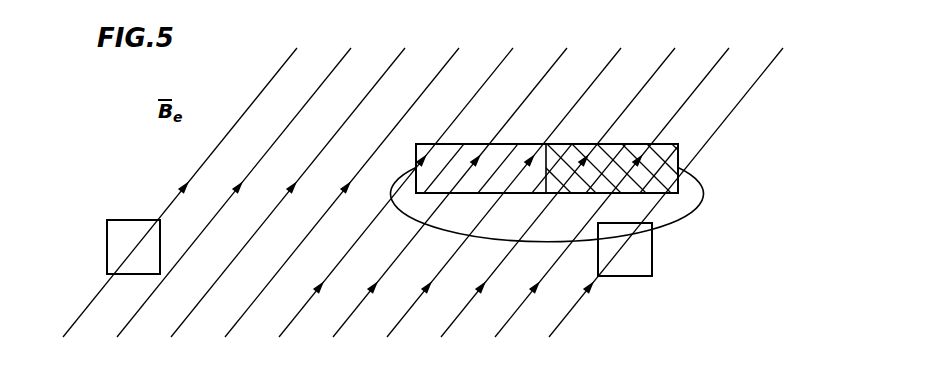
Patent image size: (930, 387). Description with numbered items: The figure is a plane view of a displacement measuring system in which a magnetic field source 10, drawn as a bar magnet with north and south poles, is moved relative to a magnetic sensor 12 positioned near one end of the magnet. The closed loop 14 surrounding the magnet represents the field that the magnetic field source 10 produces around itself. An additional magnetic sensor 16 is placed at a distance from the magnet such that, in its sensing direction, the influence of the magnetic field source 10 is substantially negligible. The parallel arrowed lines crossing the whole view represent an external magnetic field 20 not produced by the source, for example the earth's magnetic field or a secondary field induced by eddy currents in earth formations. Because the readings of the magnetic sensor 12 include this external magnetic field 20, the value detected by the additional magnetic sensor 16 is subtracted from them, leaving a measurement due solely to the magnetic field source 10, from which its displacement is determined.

The magnetic field source 10 is at (619, 157).
The magnetic sensor 12 is at (654, 254).
The magnet field lines 14 is at (705, 188).
The additional magnetic sensor 16 is at (127, 227).
The external magnetic field 20 is at (263, 70).